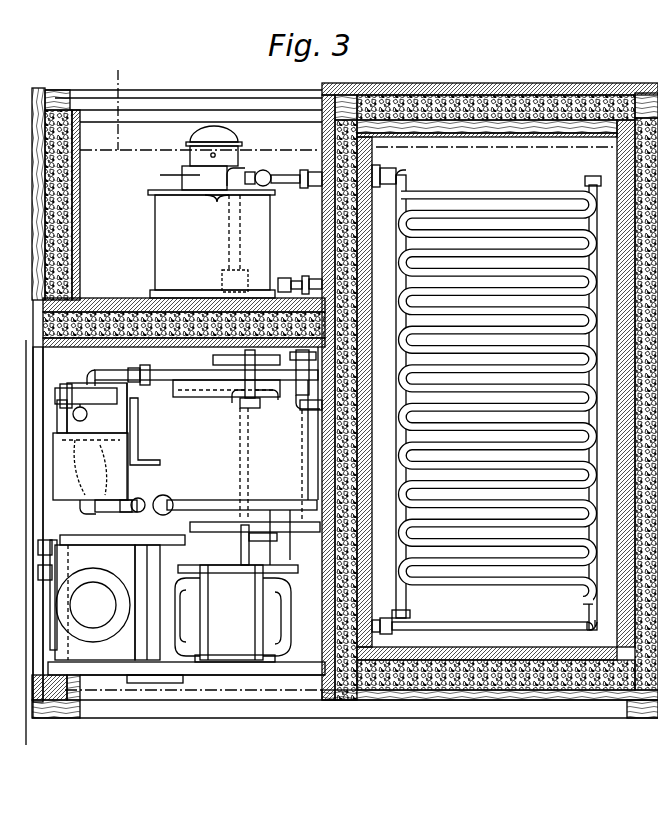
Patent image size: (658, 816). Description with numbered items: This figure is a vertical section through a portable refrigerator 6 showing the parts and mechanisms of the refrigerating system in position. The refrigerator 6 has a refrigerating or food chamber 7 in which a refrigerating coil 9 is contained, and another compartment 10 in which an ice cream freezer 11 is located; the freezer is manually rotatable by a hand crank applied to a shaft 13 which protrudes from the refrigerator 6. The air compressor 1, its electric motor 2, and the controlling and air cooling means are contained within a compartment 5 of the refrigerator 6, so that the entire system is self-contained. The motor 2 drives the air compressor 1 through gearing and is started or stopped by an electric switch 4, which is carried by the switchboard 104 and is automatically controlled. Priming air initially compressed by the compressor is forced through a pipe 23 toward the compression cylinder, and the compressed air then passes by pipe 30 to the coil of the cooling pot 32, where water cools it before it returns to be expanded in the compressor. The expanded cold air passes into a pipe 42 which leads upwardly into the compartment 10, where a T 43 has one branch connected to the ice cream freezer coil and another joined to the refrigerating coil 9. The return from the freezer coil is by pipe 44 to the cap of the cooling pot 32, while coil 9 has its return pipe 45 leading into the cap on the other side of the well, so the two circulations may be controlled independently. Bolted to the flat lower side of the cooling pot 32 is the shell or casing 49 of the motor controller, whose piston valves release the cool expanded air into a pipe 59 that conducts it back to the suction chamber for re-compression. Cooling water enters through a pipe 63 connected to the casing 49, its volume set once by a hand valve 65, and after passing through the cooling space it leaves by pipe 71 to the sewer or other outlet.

The air compressor 1 is at (85, 493).
The electric motor 2 is at (186, 592).
The electric switch 4 is at (71, 407).
The compartment 5 is at (80, 152).
The refrigerator 6 is at (45, 322).
The refrigerating chamber 7 is at (490, 391).
The refrigerating coil 9 is at (580, 409).
The compartment 10 is at (183, 195).
The ice cream freezer 11 is at (157, 230).
The shaft 13 is at (32, 116).
The pipe 23 is at (53, 463).
The pipe 30 is at (158, 393).
The cooling pot 32 is at (235, 462).
The pipe 42 is at (188, 174).
The T 43 is at (268, 174).
The pipe 44 is at (288, 278).
The return pipe 45 is at (262, 400).
The shell or casing 49 is at (163, 498).
The pipe 59 is at (40, 542).
The pipe 63 is at (40, 568).
The hand valve 65 is at (150, 511).
The pipe 71 is at (249, 461).
The switchboard 104 is at (148, 441).